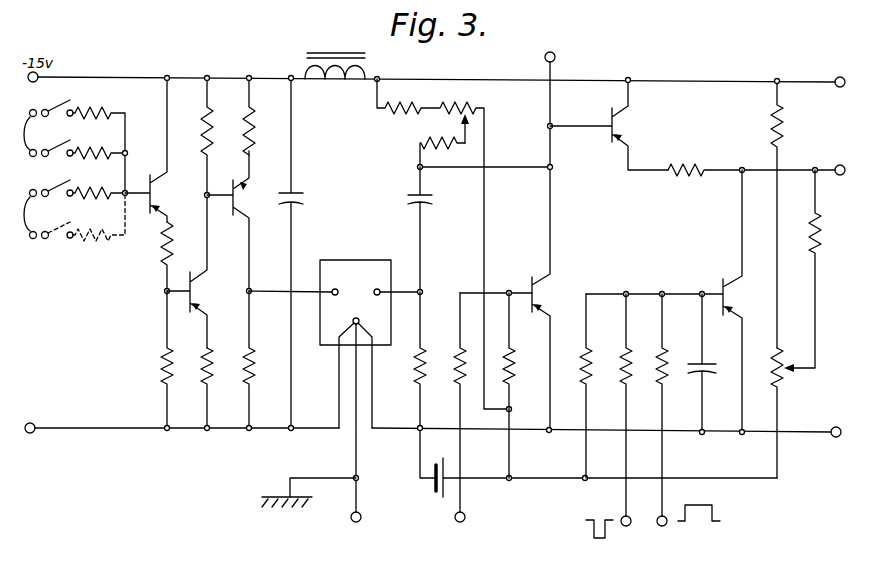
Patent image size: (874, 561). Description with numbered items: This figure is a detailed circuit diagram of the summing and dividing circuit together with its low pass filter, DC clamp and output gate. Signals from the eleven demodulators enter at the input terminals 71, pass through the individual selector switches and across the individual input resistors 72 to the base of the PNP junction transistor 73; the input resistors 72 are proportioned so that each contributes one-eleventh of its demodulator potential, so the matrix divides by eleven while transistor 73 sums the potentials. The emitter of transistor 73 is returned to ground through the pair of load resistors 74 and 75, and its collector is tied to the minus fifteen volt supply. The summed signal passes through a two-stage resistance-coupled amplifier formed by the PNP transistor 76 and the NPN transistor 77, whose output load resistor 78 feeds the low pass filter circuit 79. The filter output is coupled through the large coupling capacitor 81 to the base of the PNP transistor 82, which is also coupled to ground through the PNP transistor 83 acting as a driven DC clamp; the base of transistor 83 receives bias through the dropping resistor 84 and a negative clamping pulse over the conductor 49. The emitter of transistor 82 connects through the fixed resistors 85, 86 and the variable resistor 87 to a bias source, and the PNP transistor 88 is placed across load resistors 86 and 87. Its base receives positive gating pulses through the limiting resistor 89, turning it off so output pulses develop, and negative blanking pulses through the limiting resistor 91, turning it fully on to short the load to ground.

The conductor 49 is at (458, 502).
The input terminals 71 is at (47, 169).
The input resistors 72 is at (98, 110).
The PNP junction transistor 73 is at (152, 197).
The load resistor 74 is at (160, 250).
The load resistor 75 is at (160, 365).
The PNP transistor 76 is at (193, 292).
The NPN transistor 77 is at (236, 187).
The output load resistor 78 is at (253, 349).
The low pass filter circuit 79 is at (371, 259).
The coupling capacitor 81 is at (412, 205).
The PNP transistor 82 is at (615, 125).
The PNP transistor 83 is at (531, 283).
The dropping resistor 84 is at (456, 356).
The limiting resistor 85 is at (690, 177).
The load resistor 86 is at (822, 240).
The variable resistor 87 is at (782, 385).
The PNP transistor 88 is at (721, 285).
The limiting resistor 89 is at (666, 351).
The limiting resistor 91 is at (630, 351).